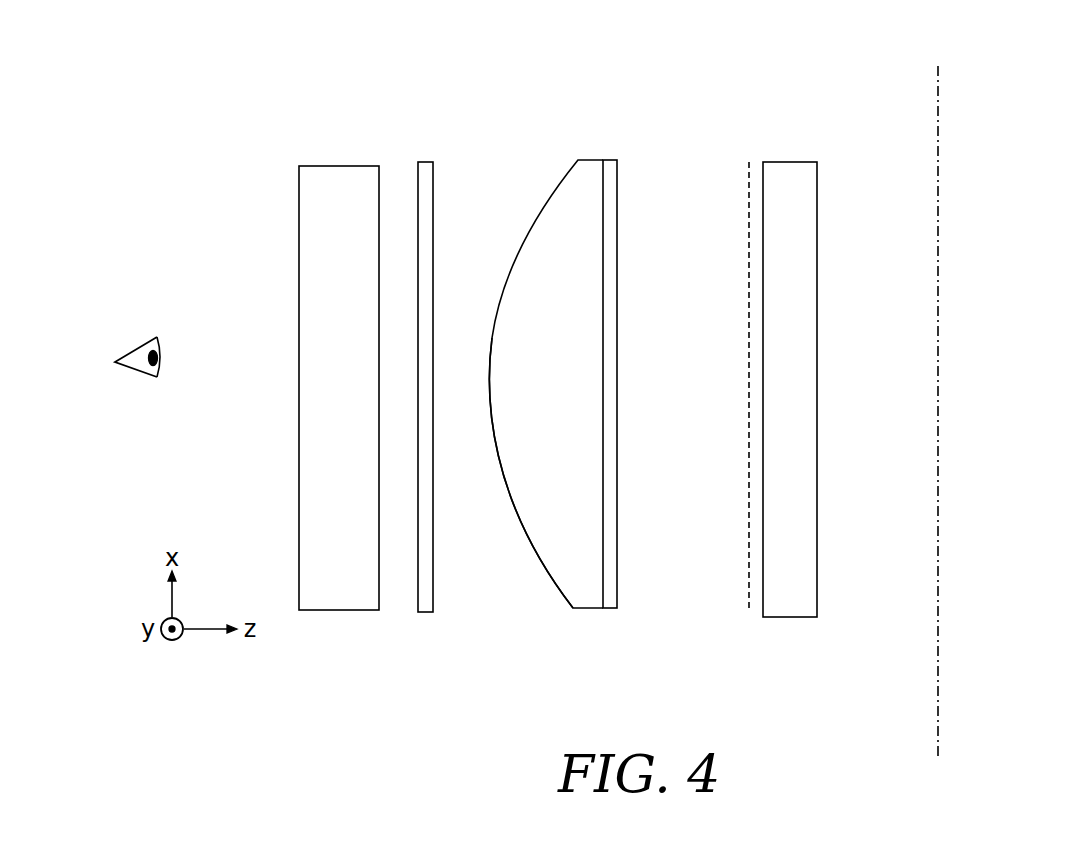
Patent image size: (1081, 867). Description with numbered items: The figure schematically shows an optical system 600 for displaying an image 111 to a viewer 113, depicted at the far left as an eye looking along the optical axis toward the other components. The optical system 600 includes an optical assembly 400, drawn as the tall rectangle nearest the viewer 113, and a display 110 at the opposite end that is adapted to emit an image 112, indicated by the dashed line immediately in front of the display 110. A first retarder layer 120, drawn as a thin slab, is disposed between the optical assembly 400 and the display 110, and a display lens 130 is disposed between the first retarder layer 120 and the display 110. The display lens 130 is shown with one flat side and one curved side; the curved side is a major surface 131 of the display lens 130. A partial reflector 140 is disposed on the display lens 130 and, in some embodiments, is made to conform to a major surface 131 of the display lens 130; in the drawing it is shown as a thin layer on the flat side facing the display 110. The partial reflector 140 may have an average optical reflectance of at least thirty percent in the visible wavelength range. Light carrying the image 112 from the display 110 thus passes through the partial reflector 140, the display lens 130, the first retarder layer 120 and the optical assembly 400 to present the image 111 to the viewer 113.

The optical system 600 is at (225, 123).
The optical assembly 400 is at (360, 354).
The first retarder layer 120 is at (425, 168).
The display lens 130 is at (583, 595).
The major surface 131 is at (602, 512).
The partial reflector 140 is at (610, 170).
The image 112 is at (749, 178).
The display 110 is at (795, 172).
The image 111 is at (938, 105).
The viewer 113 is at (128, 367).